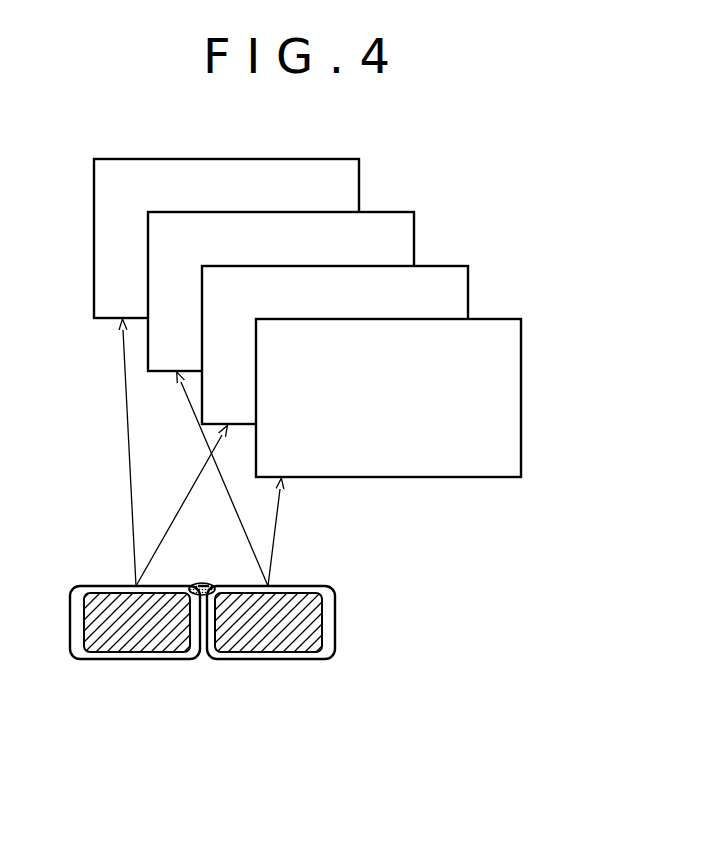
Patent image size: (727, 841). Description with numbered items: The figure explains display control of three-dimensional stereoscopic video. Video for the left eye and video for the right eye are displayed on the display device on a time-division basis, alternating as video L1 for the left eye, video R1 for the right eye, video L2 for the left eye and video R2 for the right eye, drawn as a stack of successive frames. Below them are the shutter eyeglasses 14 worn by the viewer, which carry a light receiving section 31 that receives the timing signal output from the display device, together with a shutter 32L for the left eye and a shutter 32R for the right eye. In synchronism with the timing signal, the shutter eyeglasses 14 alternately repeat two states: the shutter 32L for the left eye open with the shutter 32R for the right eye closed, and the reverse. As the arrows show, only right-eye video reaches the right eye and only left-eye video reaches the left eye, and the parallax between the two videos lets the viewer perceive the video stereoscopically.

The video for the right eye R2 is at (359, 183).
The video for the left eye L2 is at (414, 240).
The video for the right eye R1 is at (468, 295).
The video for the left eye L1 is at (521, 382).
The shutter eyeglasses 14 is at (335, 627).
The light receiving section 31 is at (202, 583).
The shutter for the right eye 32R is at (133, 638).
The shutter for the left eye 32L is at (265, 638).